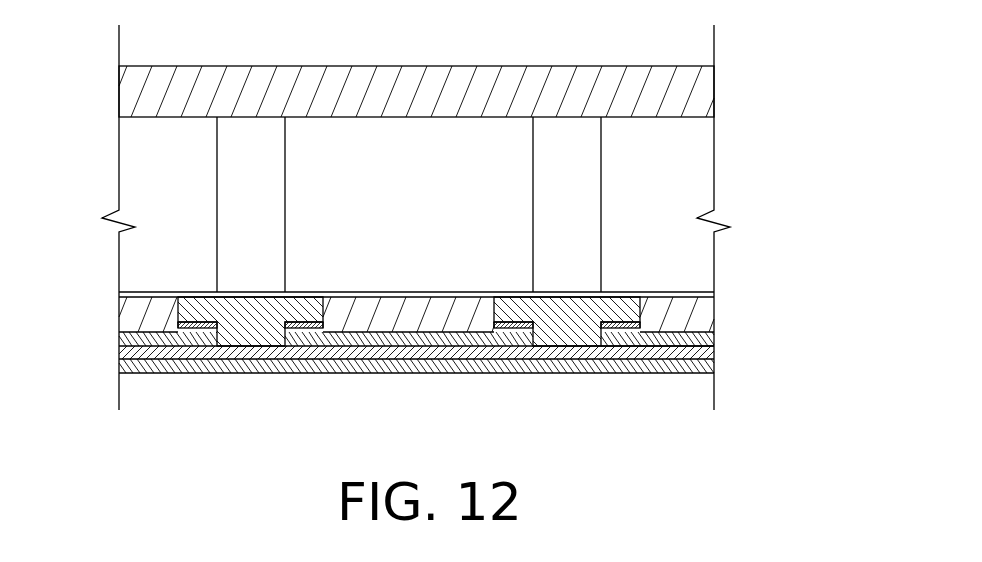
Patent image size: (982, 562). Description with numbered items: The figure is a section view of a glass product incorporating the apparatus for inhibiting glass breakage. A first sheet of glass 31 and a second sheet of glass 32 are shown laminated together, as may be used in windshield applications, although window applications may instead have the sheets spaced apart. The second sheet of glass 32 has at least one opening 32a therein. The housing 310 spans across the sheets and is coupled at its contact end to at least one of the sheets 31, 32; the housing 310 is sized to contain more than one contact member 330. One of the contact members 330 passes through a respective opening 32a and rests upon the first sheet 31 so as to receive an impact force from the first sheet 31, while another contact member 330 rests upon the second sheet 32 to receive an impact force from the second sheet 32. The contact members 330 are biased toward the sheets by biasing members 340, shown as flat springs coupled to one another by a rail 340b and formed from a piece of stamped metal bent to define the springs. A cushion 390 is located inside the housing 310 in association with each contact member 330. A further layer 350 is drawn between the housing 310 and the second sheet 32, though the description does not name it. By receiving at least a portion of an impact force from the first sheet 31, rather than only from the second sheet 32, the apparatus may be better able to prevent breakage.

The housing 310 is at (396, 66).
The biasing member 340 is at (242, 175).
The rail 340b is at (361, 292).
The contact member 330 is at (254, 334).
The cushion 390 is at (305, 328).
The dielectric layer 350 is at (707, 340).
The second sheet of glass 32 is at (704, 352).
The opening 32a is at (602, 352).
The first sheet of glass 31 is at (707, 365).